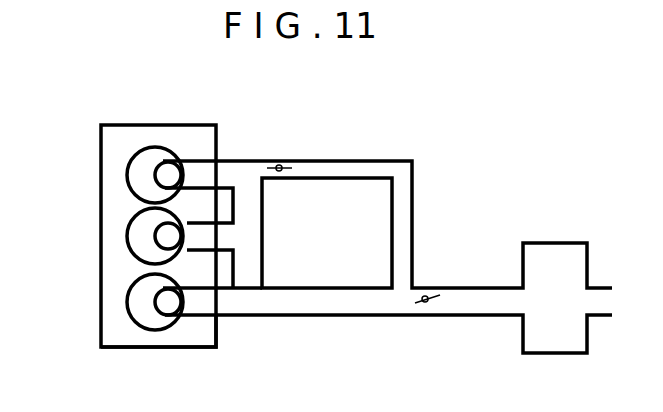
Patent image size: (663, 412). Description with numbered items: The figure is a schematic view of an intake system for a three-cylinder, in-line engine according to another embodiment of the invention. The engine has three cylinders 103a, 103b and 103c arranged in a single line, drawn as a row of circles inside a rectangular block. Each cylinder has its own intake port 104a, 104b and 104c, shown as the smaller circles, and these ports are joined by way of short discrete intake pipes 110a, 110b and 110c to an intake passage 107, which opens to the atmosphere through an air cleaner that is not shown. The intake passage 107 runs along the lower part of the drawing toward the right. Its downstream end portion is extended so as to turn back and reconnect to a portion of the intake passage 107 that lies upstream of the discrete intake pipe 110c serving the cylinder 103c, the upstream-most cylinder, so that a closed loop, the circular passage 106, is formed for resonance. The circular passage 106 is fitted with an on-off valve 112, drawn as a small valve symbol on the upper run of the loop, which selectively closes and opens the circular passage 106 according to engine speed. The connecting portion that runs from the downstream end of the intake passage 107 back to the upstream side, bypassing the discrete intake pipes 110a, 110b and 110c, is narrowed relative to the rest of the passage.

The cylinder 103a is at (130, 163).
The cylinder 103b is at (129, 236).
The cylinder 103c is at (129, 303).
The intake port 104a is at (156, 176).
The intake port 104b is at (157, 240).
The intake port 104c is at (157, 307).
The circular passage 106 is at (395, 159).
The intake passage 107 is at (466, 316).
The discrete intake pipe 110a is at (199, 160).
The discrete intake pipe 110b is at (203, 256).
The discrete intake pipe 110c is at (200, 318).
The on-off valve 112 is at (283, 168).